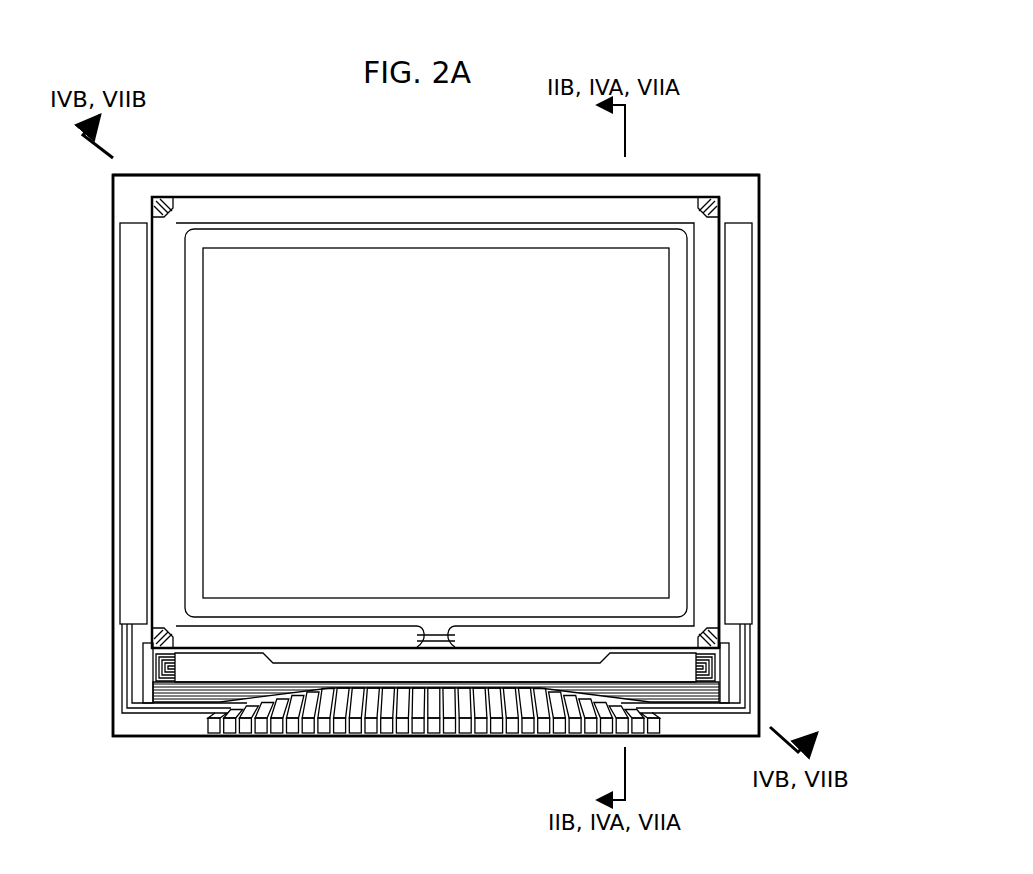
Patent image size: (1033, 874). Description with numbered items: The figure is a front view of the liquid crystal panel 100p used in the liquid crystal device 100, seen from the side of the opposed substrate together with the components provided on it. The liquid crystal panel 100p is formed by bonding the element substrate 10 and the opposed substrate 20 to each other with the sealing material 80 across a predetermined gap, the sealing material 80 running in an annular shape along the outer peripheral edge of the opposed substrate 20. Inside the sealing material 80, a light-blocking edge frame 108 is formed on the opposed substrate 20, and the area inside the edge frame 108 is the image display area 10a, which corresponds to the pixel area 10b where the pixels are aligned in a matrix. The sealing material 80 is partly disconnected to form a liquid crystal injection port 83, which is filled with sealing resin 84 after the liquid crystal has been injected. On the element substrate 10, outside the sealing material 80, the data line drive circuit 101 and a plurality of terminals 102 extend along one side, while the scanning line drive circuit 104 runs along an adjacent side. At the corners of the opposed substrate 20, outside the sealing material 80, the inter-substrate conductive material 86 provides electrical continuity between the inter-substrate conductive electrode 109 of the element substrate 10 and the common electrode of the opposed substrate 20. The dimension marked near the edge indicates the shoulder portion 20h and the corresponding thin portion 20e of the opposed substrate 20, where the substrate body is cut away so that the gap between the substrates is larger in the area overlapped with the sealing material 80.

The liquid crystal device 100 is at (697, 64).
The liquid crystal panel 100p is at (680, 168).
The element substrate 10 is at (513, 175).
The opposed substrate 20 is at (547, 197).
The thin portion 20e is at (750, 422).
The shoulder portion 20h is at (645, 433).
The image display area 10a is at (344, 423).
The pixel area 10b is at (258, 412).
The sealing material 80 is at (707, 402).
The edge frame 108 is at (680, 313).
The scanning line drive circuit 104 is at (130, 548).
The liquid crystal injection port 83 is at (437, 632).
The sealing resin 84 is at (325, 660).
The data line drive circuit 101 is at (683, 672).
The terminals 102 is at (442, 728).
The inter-substrate conductive material 86 is at (497, 443).
The inter-substrate conductive electrode 109 is at (163, 199).